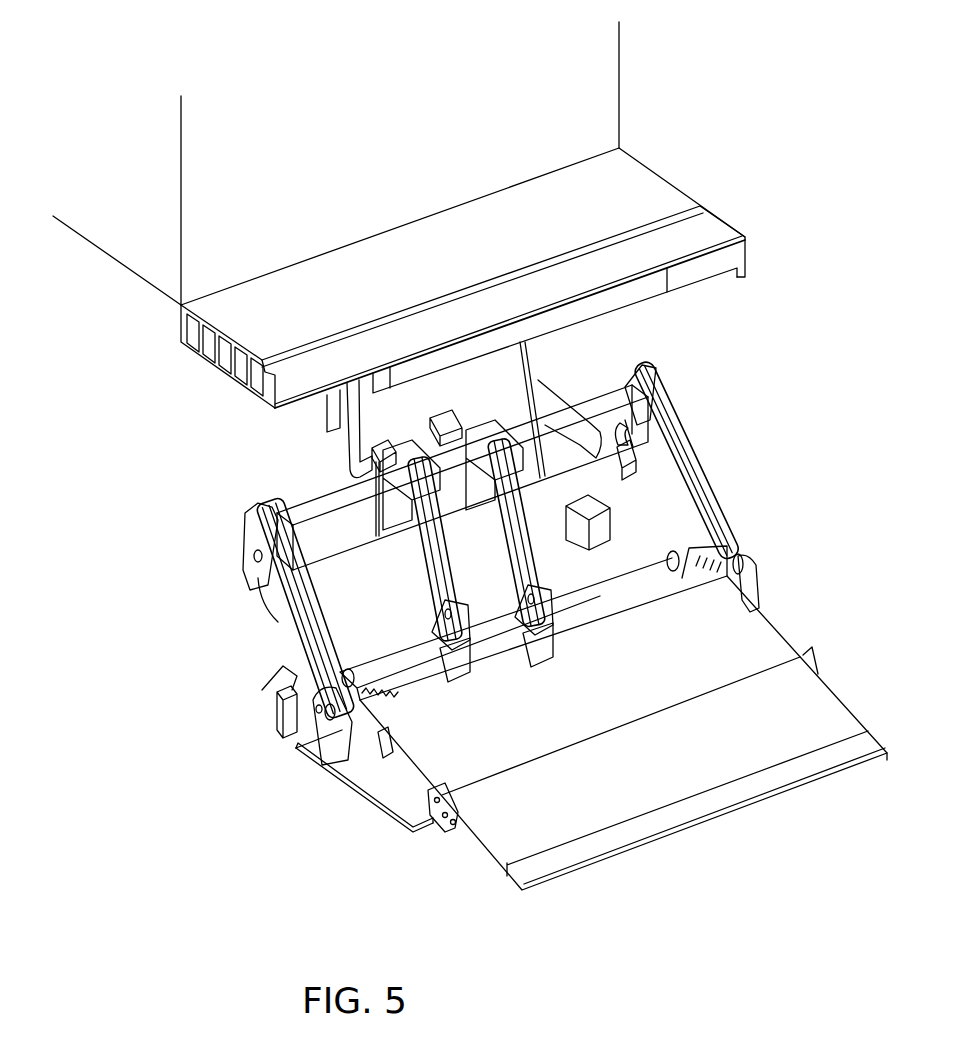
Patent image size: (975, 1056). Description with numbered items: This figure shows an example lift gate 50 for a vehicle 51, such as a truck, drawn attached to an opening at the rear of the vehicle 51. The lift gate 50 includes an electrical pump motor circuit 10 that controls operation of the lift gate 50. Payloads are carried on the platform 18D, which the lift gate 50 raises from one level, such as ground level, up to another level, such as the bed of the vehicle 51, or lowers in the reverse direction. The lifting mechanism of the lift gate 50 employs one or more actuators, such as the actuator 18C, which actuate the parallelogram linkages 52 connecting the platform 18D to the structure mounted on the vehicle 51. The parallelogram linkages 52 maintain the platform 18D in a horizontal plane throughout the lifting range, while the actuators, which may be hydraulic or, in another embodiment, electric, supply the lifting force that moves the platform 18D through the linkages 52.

The electrical pump motor circuit 10 is at (592, 556).
The actuator 18C is at (667, 517).
The platform 18D is at (728, 818).
The lift gate 50 is at (741, 518).
The vehicle 51 is at (637, 88).
The parallelogram linkages 52 is at (693, 455).